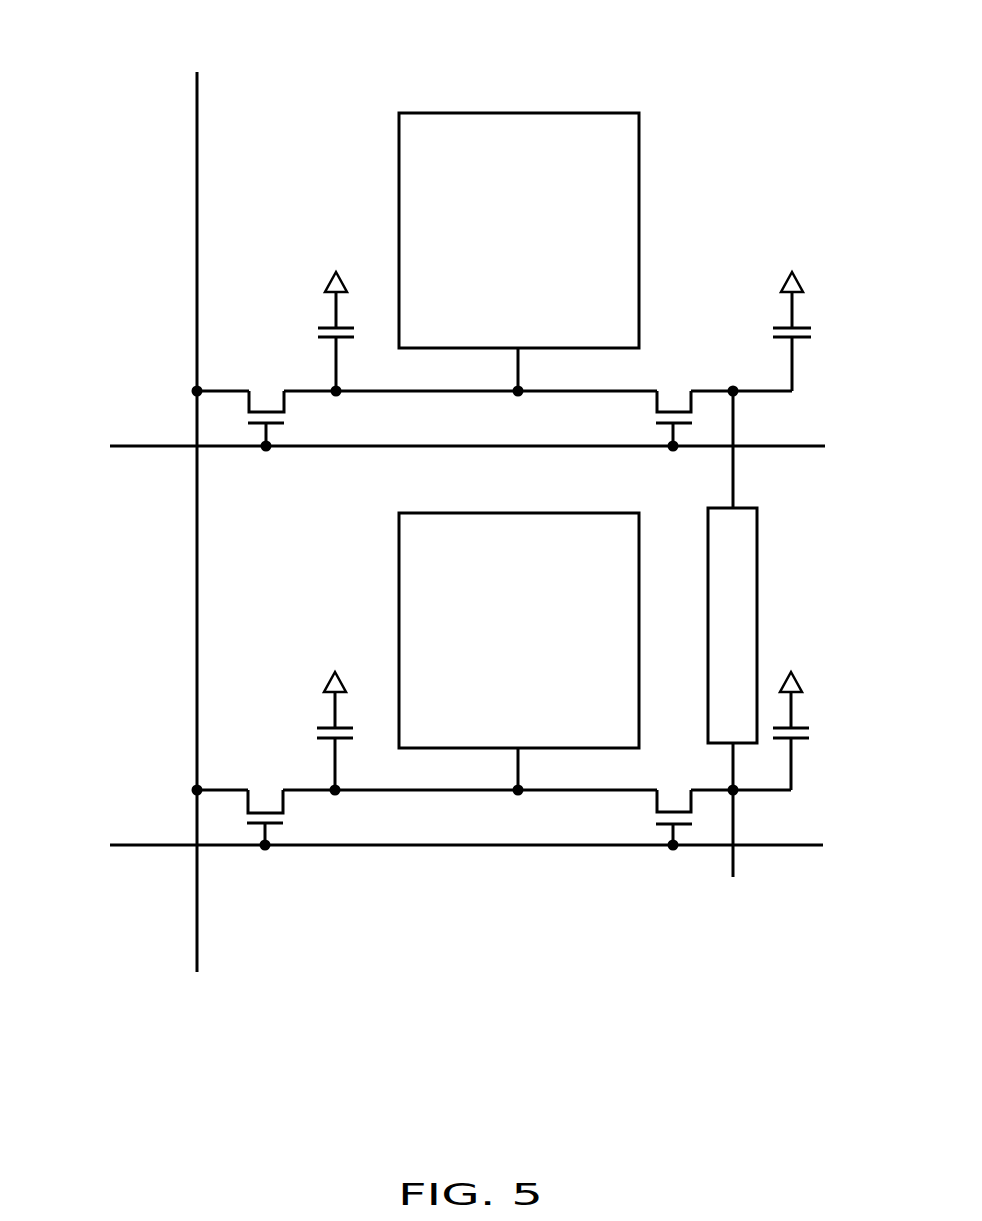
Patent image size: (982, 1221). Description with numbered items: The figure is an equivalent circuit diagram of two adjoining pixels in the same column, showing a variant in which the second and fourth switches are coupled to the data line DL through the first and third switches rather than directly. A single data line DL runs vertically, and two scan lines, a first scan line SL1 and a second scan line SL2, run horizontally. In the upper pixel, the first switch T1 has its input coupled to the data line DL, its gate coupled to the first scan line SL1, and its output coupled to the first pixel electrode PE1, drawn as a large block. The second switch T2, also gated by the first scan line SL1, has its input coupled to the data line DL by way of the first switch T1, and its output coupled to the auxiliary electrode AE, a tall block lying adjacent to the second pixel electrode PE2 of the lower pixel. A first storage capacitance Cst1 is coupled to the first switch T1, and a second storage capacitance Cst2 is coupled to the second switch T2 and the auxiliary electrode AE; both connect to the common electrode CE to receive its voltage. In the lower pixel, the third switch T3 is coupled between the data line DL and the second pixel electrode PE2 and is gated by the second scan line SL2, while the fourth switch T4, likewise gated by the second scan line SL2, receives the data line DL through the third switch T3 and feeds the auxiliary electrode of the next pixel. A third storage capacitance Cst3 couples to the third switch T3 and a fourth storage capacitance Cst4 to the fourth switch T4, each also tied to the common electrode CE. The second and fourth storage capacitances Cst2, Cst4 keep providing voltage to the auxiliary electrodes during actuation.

The data line DL is at (205, 503).
The first scan line SL1 is at (438, 446).
The second scan line SL2 is at (437, 845).
The first switch T1 is at (266, 405).
The second switch T2 is at (674, 405).
The third switch T3 is at (265, 804).
The fourth switch T4 is at (674, 804).
The first storage capacitance Cst1 is at (304, 341).
The second storage capacitance Cst2 is at (825, 341).
The third storage capacitance Cst3 is at (303, 741).
The fourth storage capacitance Cst4 is at (825, 741).
The common electrode CE is at (563, 463).
The first pixel electrode PE1 is at (546, 246).
The second pixel electrode PE2 is at (546, 646).
The auxiliary electrode AE is at (753, 651).